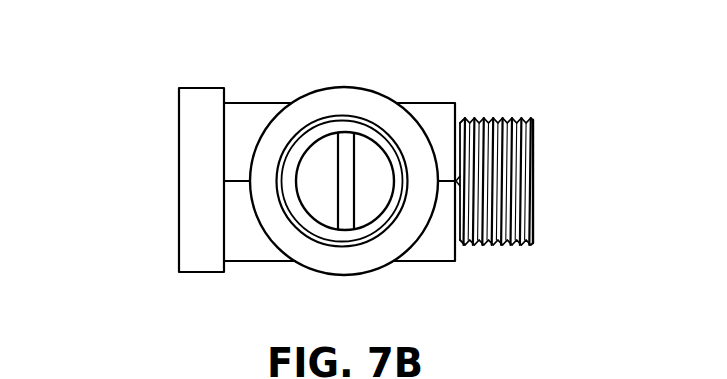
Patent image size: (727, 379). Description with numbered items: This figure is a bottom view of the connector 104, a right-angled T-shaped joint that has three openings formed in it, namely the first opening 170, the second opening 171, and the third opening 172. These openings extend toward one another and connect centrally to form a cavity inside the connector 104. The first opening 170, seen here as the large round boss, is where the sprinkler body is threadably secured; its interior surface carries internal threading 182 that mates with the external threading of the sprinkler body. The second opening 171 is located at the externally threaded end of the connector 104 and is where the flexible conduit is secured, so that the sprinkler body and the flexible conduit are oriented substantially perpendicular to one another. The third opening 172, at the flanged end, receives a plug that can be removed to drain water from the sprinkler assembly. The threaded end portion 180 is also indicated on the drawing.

The connector 104 is at (427, 101).
The first opening 170 is at (343, 286).
The second opening 171 is at (543, 180).
The third opening 172 is at (174, 168).
The threaded portion 180 is at (513, 116).
The internal threading 182 is at (345, 117).